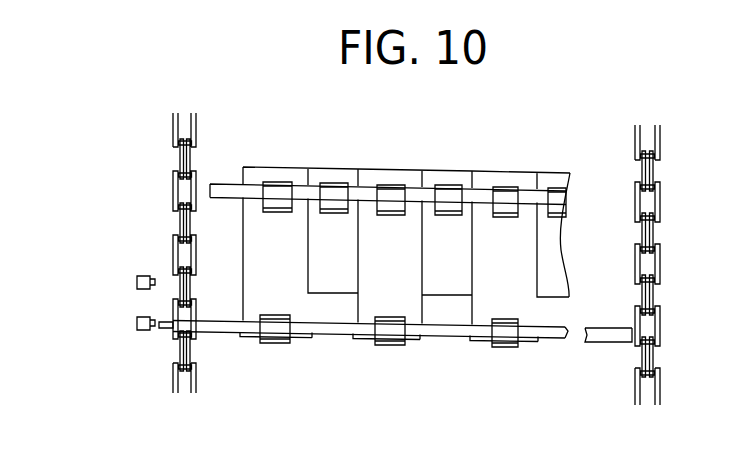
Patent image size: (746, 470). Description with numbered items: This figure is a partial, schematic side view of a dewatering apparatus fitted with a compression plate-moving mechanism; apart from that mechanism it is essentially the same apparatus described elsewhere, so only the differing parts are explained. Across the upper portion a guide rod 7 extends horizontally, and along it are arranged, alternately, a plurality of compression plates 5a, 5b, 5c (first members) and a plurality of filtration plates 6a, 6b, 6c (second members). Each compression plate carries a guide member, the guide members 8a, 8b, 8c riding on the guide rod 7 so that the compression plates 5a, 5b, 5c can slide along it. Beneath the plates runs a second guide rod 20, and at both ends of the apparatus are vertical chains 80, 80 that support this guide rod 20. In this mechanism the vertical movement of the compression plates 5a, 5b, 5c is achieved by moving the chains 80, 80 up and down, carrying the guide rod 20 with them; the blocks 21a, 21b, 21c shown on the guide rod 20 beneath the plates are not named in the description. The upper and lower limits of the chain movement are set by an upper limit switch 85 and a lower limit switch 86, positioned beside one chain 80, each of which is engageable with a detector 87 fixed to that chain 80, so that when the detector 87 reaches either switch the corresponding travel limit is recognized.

The compression plate 5a is at (528, 171).
The compression plate 5b is at (368, 169).
The compression plate 5c is at (295, 167).
The filtration plate 6a is at (558, 174).
The filtration plate 6b is at (445, 185).
The filtration plate 6c is at (335, 183).
The guide rod 7 is at (223, 184).
The guide member 8a is at (501, 187).
The guide member 8b is at (392, 185).
The guide member 8c is at (272, 182).
The guide rod 20 is at (555, 342).
The slide block 21a is at (503, 347).
The slide block 21b is at (389, 345).
The slide block 21c is at (277, 343).
The chain 80 is at (175, 222).
The upper limit switch 85 is at (137, 281).
The lower limit switch 86 is at (137, 322).
The detector 87 is at (165, 331).